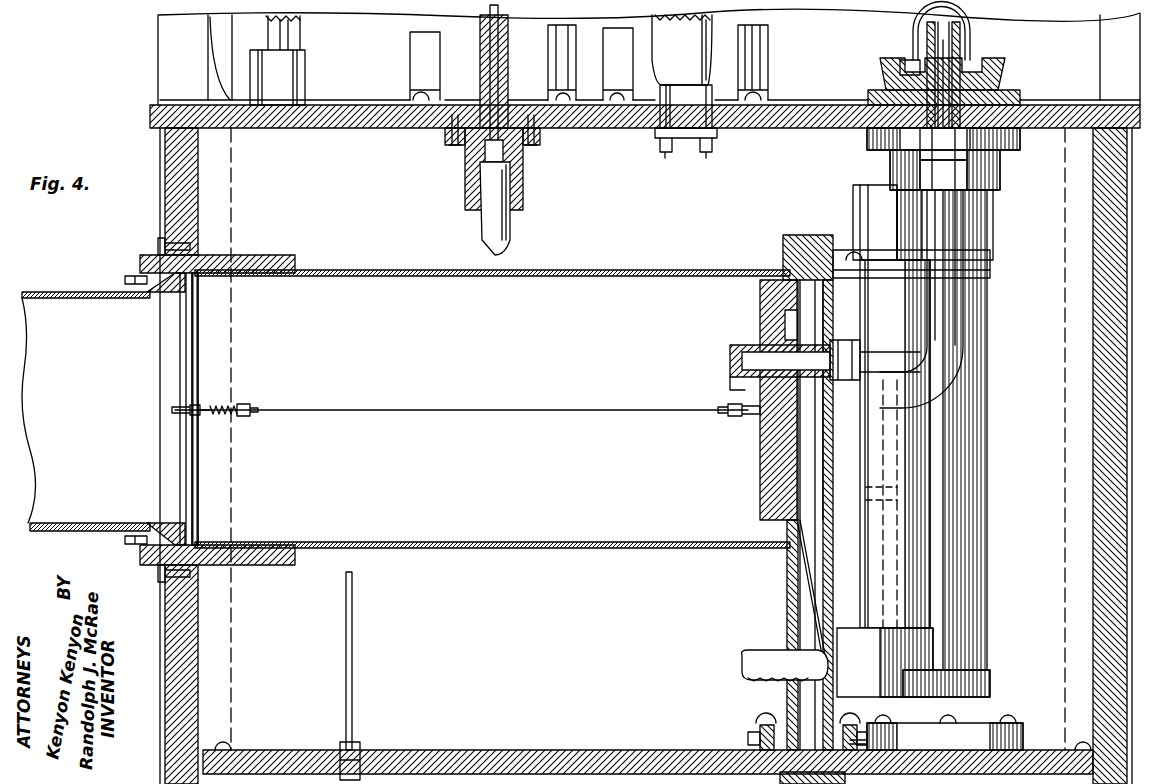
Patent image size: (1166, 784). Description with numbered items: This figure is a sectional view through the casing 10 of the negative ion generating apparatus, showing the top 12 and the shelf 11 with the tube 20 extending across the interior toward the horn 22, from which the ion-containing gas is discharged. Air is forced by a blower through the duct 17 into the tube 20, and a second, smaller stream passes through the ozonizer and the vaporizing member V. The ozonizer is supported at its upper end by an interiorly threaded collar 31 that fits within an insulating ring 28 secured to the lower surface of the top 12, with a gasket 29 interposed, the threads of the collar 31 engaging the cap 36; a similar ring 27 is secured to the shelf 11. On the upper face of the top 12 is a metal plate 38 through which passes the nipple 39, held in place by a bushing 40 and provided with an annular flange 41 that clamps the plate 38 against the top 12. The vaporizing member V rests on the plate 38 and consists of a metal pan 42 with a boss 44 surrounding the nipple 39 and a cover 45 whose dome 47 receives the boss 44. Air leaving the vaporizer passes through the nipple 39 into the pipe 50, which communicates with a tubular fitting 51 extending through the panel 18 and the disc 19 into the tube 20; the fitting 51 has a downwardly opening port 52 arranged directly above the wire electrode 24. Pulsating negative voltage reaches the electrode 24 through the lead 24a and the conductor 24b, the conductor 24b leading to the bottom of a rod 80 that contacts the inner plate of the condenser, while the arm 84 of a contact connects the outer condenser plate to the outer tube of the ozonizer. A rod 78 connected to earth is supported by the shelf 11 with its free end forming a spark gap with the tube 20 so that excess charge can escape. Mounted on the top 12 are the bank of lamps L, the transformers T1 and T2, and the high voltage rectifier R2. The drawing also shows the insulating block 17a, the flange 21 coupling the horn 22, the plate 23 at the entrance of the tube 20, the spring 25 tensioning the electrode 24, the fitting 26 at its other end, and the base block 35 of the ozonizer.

The casing 10 is at (209, 207).
The shelf 11 is at (552, 750).
The top 12 is at (362, 128).
The duct 17 is at (820, 418).
The insulating block 17a is at (758, 328).
The panel 18 is at (806, 238).
The disc 19 is at (760, 512).
The tube 20 is at (414, 270).
The flange 21 is at (252, 570).
The horn 22 is at (65, 292).
The plate 23 is at (195, 478).
The electrode 24 is at (510, 410).
The lead 24a is at (798, 566).
The conductor 24b is at (744, 675).
The spring 25 is at (246, 402).
The fitting 26 is at (738, 416).
The ring 27 is at (1023, 730).
The ring 28 is at (895, 150).
The gasket 29 is at (867, 132).
The collar 31 is at (1000, 170).
The block 35 is at (988, 686).
The cap 36 is at (993, 230).
The metal plate 38 is at (1012, 90).
The nipple 39 is at (950, 44).
The bushing 40 is at (968, 135).
The annular flange 41 is at (888, 80).
The metal pan 42 is at (1005, 62).
The boss 44 is at (923, 36).
The cover 45 is at (905, 60).
The dome 47 is at (970, 24).
The pipe 50 is at (965, 292).
The tubular fitting 51 is at (730, 350).
The port 52 is at (732, 384).
The rod 78 is at (352, 630).
The rod 80 is at (883, 578).
The arm 84 is at (935, 392).
The bank of lamps L is at (290, 28).
The transformer T1 is at (420, 60).
The transformer T2 is at (760, 48).
The high voltage rectifier R2 is at (684, 86).
The vaporizing member V is at (1019, 53).